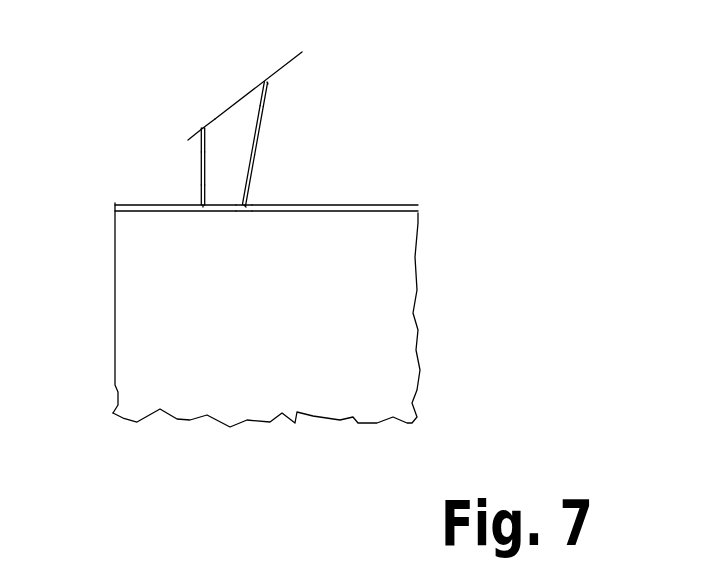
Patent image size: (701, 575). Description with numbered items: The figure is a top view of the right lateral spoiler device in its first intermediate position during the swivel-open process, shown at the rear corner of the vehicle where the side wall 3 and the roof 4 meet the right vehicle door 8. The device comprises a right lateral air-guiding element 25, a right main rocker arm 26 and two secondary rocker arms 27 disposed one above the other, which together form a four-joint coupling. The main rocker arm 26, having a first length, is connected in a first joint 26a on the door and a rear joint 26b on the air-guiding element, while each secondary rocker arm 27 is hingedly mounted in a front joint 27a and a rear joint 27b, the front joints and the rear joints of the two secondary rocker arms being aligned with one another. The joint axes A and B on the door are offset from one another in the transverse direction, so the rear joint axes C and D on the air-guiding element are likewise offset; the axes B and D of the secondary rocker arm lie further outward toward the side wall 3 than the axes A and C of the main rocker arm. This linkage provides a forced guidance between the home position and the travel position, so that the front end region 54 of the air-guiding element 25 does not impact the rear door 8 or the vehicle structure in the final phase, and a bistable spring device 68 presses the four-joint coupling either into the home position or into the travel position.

The side wall 3 is at (115, 292).
The roof 4 is at (137, 367).
The right vehicle door 8 is at (266, 211).
The right lateral air-guiding element 25 is at (290, 62).
The right main rocker arm 26 is at (317, 199).
The first joint 26a is at (243, 207).
The rear joint 26b is at (267, 80).
The secondary rocker arm 27 is at (156, 202).
The front joint 27a is at (203, 207).
The rear joint 27b is at (203, 128).
The front end region 54 is at (202, 137).
The bistable spring device 68 is at (243, 204).
The joint axis A is at (246, 207).
The joint axis B is at (203, 207).
The joint axis C is at (268, 82).
The joint axis D is at (203, 128).